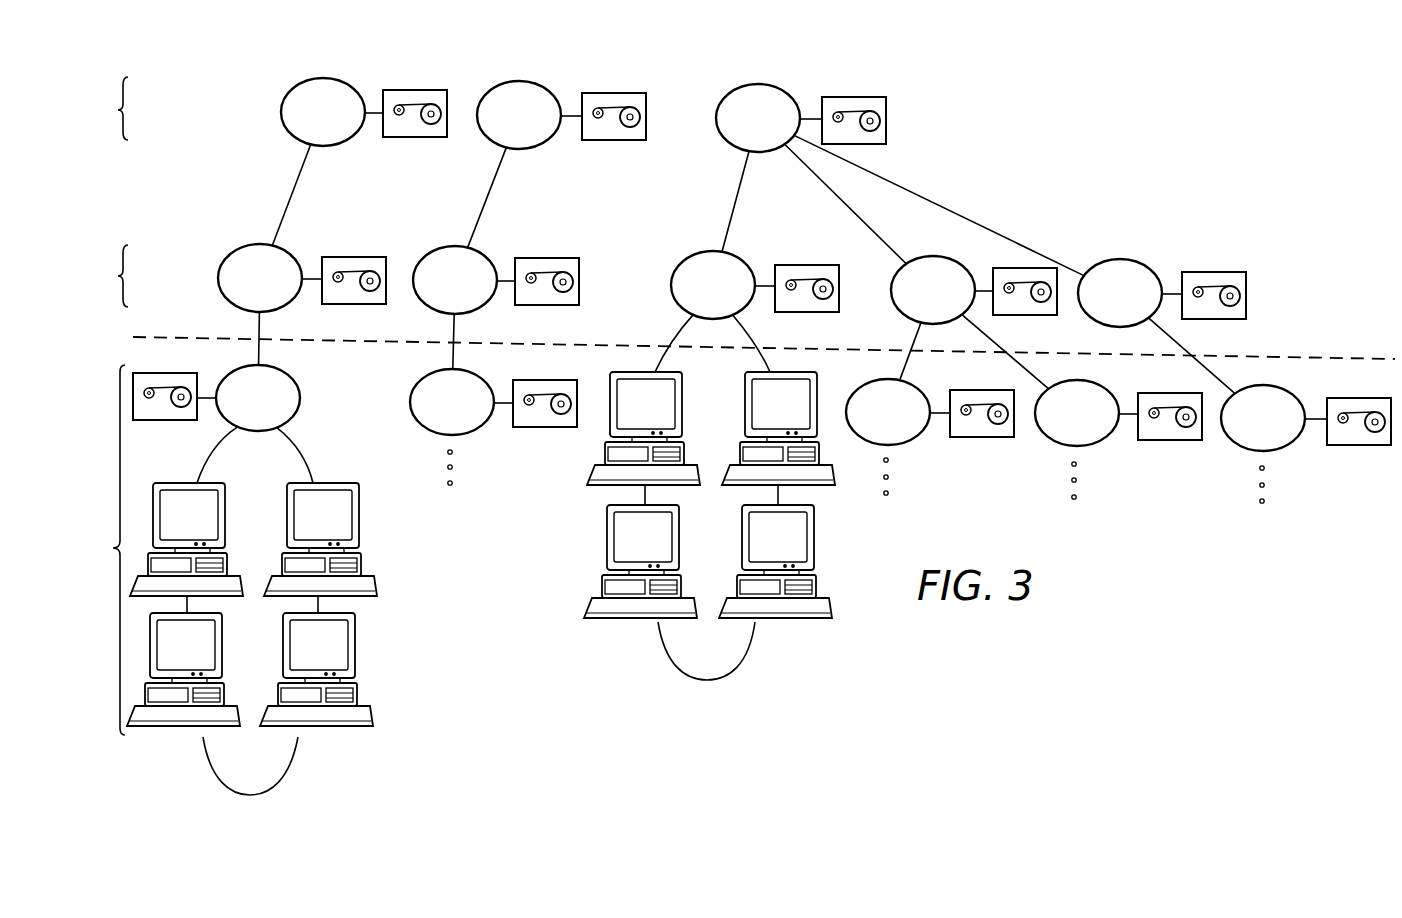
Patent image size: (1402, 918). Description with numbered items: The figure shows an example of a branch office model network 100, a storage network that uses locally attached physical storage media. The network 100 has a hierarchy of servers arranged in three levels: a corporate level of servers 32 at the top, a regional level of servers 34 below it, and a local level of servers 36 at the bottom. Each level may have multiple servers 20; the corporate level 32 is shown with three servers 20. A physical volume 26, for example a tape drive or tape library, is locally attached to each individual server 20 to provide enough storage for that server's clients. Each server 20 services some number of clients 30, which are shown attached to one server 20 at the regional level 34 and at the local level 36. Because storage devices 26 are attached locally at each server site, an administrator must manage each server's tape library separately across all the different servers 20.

The server 20 is at (309, 126).
The physical volume 26 is at (415, 90).
The client 30 is at (174, 526).
The corporate level of servers 32 is at (110, 108).
The regional level of servers 34 is at (110, 276).
The local level of servers 36 is at (106, 550).
The branch office model network 100 is at (1108, 123).